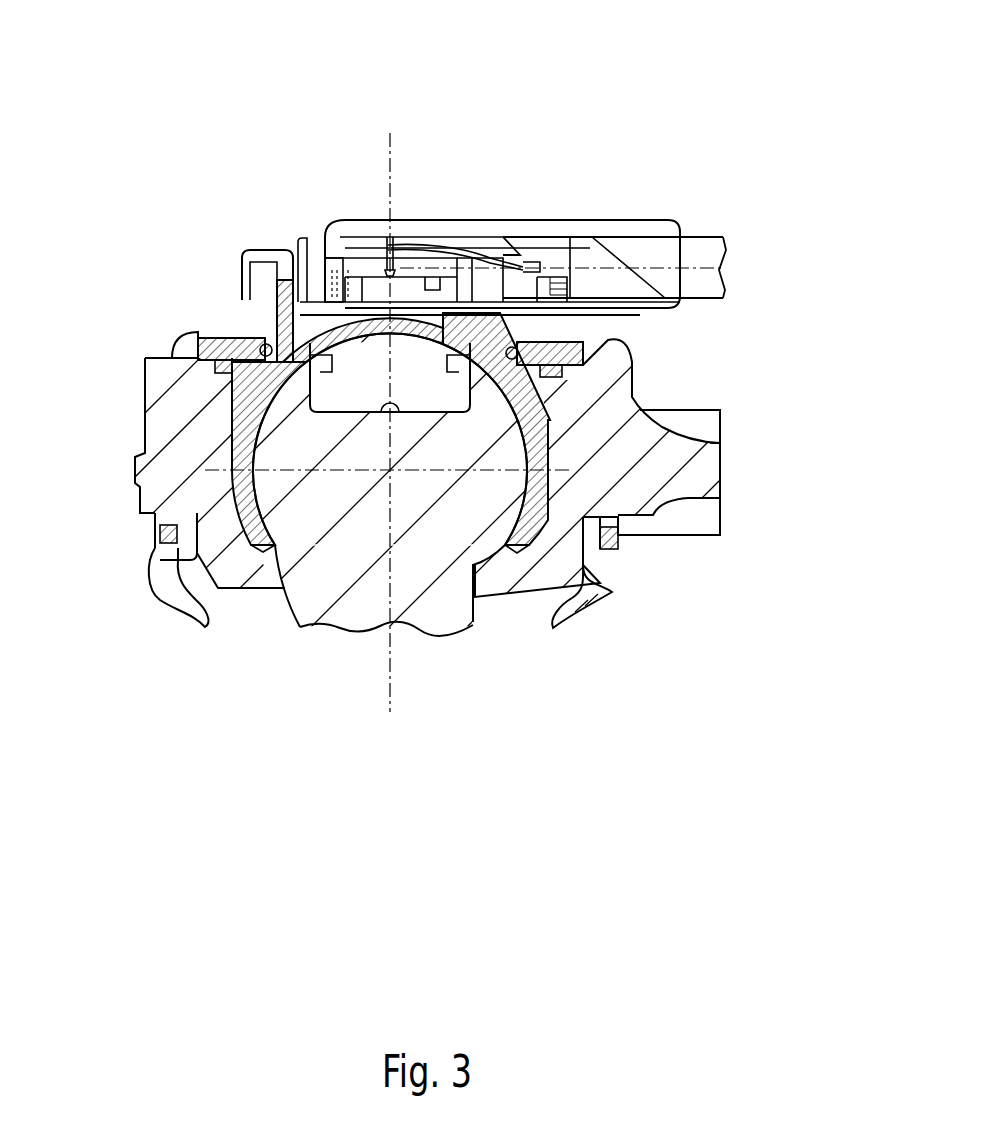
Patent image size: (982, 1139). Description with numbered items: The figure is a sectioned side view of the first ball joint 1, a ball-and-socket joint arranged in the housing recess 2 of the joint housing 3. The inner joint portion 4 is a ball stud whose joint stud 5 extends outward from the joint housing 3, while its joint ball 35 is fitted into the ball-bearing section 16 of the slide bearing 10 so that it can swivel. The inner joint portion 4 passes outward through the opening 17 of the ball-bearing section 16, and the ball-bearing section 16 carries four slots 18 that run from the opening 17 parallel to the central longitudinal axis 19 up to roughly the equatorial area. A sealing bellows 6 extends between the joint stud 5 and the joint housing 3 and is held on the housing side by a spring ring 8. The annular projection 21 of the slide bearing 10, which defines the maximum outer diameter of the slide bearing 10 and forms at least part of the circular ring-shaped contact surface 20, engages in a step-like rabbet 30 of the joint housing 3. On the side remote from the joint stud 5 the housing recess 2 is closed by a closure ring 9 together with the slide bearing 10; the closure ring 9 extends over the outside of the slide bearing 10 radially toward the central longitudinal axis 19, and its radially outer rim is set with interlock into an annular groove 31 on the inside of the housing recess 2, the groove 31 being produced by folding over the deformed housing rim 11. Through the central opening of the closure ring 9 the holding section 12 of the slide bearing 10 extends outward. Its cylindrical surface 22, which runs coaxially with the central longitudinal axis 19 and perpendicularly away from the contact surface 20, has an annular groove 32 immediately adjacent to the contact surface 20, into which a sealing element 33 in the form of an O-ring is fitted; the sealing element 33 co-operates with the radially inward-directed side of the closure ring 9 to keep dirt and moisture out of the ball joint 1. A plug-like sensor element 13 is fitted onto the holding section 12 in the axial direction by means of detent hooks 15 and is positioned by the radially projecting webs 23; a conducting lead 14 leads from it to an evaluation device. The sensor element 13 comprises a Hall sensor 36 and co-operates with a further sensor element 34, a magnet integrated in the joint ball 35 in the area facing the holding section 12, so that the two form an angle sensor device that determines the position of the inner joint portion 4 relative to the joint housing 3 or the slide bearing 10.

The ball joint 1 is at (118, 98).
The housing recess 2 is at (220, 432).
The joint housing 3 is at (647, 379).
The inner joint portion 4 is at (310, 643).
The joint stud 5 is at (290, 503).
The sealing bellows 6 is at (620, 595).
The spring ring 8 is at (620, 545).
The closure ring 9 is at (200, 322).
The slide bearing 10 is at (560, 420).
The housing rim 11 is at (520, 312).
The holding section 12 is at (302, 300).
The sensor element 13 is at (460, 170).
The conducting lead 14 is at (712, 237).
The detent hooks 15 is at (248, 292).
The ball-bearing section 16 is at (217, 480).
The opening 17 is at (498, 607).
The slots 18 is at (535, 505).
The central longitudinal axis 19 is at (392, 692).
The contact surface 20 is at (222, 320).
The annular projection 21 is at (205, 378).
The cylindrical surface 22 is at (527, 336).
The web 23 is at (275, 290).
The rabbet 30 is at (217, 383).
The groove 31 is at (193, 350).
The annular groove 32 is at (527, 375).
The sealing element 33 is at (262, 345).
The further sensor element 34 is at (413, 350).
The joint ball 35 is at (272, 548).
The Hall sensor 36 is at (368, 277).